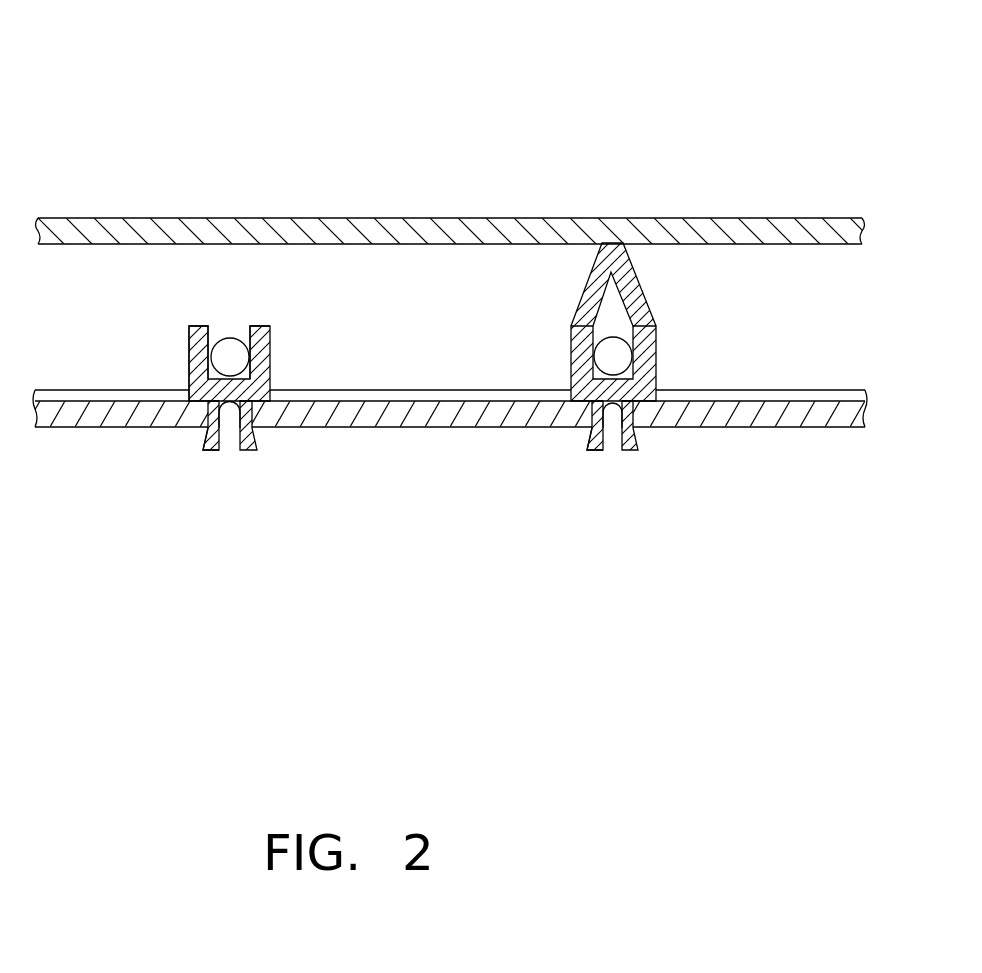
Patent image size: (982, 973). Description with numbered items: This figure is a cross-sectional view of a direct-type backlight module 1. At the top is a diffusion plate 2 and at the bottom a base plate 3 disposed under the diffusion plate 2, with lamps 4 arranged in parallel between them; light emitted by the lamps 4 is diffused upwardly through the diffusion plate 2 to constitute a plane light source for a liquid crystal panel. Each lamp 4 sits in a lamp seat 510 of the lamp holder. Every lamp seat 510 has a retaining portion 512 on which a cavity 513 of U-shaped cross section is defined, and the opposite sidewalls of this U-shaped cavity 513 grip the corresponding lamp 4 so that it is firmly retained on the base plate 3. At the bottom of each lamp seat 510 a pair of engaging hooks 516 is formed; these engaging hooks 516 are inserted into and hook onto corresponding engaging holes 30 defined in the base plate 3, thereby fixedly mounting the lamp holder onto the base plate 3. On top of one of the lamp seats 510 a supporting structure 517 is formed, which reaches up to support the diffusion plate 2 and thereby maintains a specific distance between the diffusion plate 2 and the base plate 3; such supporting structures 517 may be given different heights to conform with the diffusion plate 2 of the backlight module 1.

The direct-type backlight module 1 is at (464, 49).
The diffusion plate 2 is at (665, 230).
The base plate 3 is at (817, 408).
The lamp 4 is at (232, 353).
The engaging hole 30 is at (252, 408).
The lamp seat 510 is at (437, 275).
The retaining portion 512 is at (190, 355).
The cavity 513 is at (250, 335).
The engaging hook 516 is at (215, 452).
The supporting structure 517 is at (597, 298).